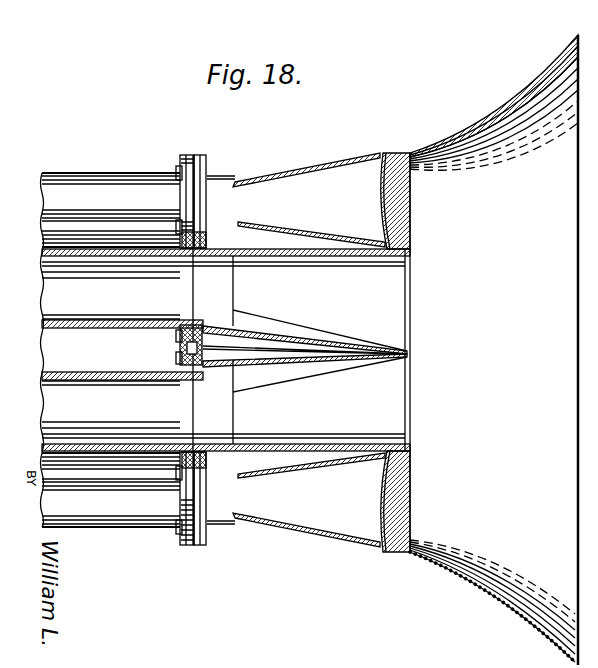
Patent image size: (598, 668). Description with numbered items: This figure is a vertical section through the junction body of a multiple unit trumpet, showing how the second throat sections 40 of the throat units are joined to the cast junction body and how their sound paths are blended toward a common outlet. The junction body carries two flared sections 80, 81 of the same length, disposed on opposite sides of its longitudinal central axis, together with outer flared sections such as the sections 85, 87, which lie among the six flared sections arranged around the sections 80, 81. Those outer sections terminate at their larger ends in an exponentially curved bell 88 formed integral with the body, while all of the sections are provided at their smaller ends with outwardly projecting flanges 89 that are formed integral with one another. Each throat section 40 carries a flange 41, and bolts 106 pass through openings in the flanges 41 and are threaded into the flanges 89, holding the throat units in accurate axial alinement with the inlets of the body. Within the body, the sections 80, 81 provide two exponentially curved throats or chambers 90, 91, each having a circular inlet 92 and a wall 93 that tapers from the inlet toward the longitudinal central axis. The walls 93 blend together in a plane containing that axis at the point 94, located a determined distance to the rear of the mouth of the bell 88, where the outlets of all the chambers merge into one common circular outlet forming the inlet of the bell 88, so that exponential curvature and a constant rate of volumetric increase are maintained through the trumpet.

The second throat section 40 is at (84, 185).
The flange 41 is at (190, 156).
The flared section 80 is at (293, 242).
The flared section 81 is at (308, 461).
The flared section 85 is at (306, 526).
The flared section 87 is at (291, 180).
The bell 88 is at (488, 125).
The flange 89 is at (208, 163).
The throat or chamber 90 is at (308, 303).
The throat or chamber 91 is at (314, 402).
The circular inlet 92 is at (203, 290).
The wall 93 is at (265, 337).
The point 94 is at (412, 300).
The bolt 106 is at (176, 172).